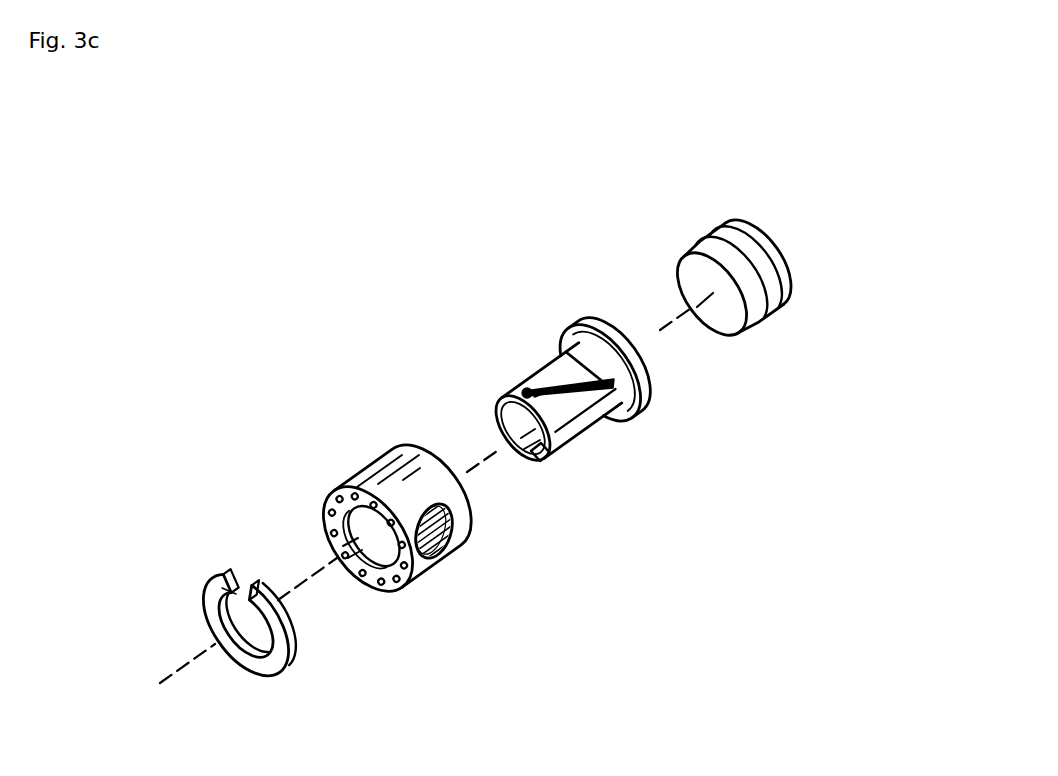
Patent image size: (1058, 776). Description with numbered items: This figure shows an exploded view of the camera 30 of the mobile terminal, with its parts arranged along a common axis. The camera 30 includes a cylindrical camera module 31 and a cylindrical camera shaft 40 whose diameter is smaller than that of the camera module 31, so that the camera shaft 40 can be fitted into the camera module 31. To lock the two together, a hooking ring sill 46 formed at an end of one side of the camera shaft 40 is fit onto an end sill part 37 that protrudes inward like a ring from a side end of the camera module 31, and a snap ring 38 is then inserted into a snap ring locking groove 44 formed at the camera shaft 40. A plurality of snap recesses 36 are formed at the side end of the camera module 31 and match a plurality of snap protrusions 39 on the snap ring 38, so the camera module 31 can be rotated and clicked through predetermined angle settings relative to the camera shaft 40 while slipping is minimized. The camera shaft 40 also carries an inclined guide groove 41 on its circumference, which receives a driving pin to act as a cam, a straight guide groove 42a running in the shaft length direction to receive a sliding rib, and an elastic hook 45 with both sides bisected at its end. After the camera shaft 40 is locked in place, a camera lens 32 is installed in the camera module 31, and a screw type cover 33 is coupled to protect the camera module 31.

The camera 30 is at (818, 231).
The camera module 31 is at (400, 453).
The camera lens 32 is at (440, 553).
The cover 33 is at (790, 272).
The snap recesses 36 is at (330, 513).
The end sill part 37 is at (336, 545).
The snap ring 38 is at (277, 670).
The snap protrusions 39 is at (210, 608).
The camera shaft 40 is at (600, 433).
The inclined guide groove 41 is at (557, 372).
The straight guide groove 42a is at (553, 452).
The snap ring locking groove 44 is at (645, 380).
The hook 45 is at (534, 386).
The hooking ring sill 46 is at (596, 330).